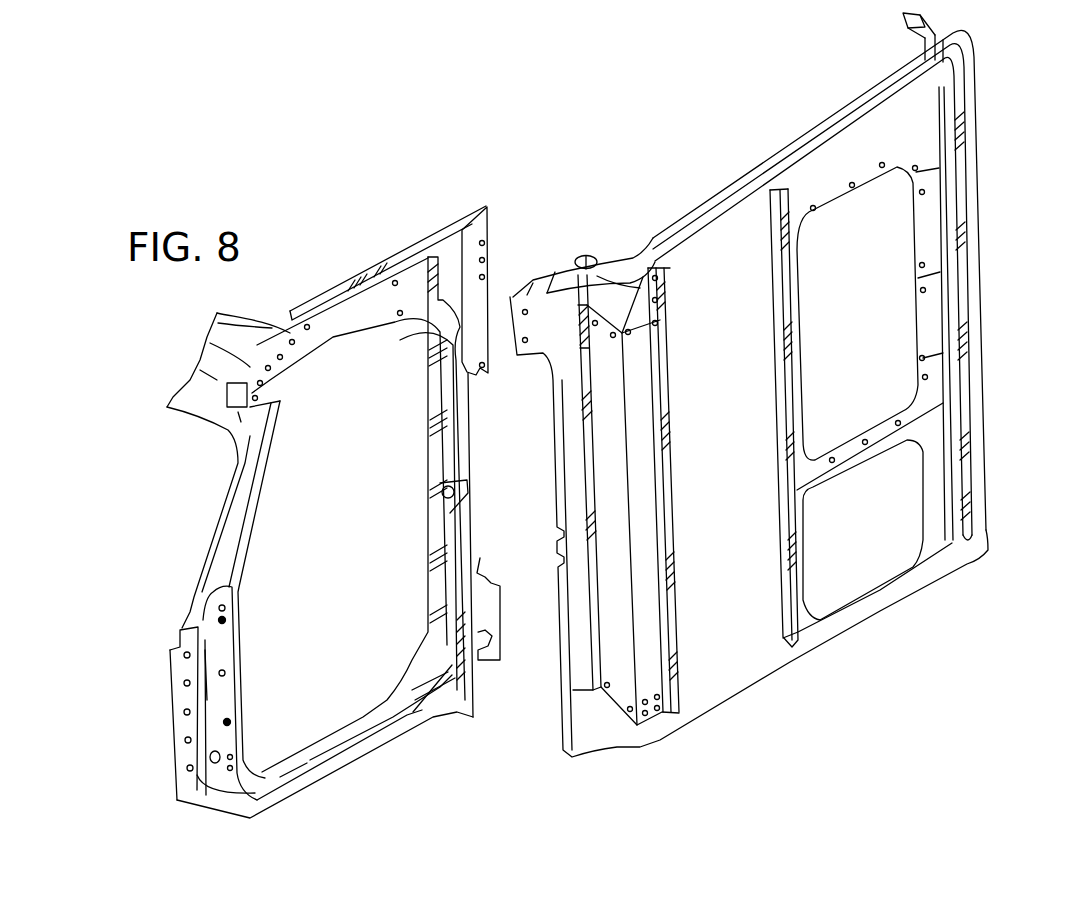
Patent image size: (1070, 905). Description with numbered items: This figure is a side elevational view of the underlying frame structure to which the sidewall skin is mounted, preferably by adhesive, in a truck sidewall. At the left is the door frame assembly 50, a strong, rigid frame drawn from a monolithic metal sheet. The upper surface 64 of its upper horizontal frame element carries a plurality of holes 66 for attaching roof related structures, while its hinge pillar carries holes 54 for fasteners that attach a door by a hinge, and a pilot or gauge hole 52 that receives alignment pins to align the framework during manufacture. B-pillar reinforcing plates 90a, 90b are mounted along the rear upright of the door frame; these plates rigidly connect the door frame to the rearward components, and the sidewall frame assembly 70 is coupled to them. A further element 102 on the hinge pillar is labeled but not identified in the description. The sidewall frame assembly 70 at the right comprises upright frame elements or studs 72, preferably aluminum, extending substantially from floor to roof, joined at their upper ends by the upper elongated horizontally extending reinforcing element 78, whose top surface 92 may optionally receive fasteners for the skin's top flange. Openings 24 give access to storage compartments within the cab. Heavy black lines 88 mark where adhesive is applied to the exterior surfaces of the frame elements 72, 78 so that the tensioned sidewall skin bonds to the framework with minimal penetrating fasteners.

The openings 24 is at (893, 255).
The door frame assembly 50 is at (186, 583).
The pilot or gauge hole 52 is at (213, 763).
The holes 54 is at (222, 620).
The upper surface 64 is at (340, 290).
The holes 66 is at (318, 305).
The sidewall underlying frame assembly 70 is at (1005, 408).
The upright frame elements 72 is at (940, 127).
The upper reinforcing element 78 is at (768, 177).
The heavy black lines 88 is at (847, 133).
The B-pillar reinforcing plate 90a is at (527, 592).
The B-pillar reinforcing plate 90b is at (487, 247).
The top surface 92 is at (590, 247).
The hinge plate 102 is at (277, 675).